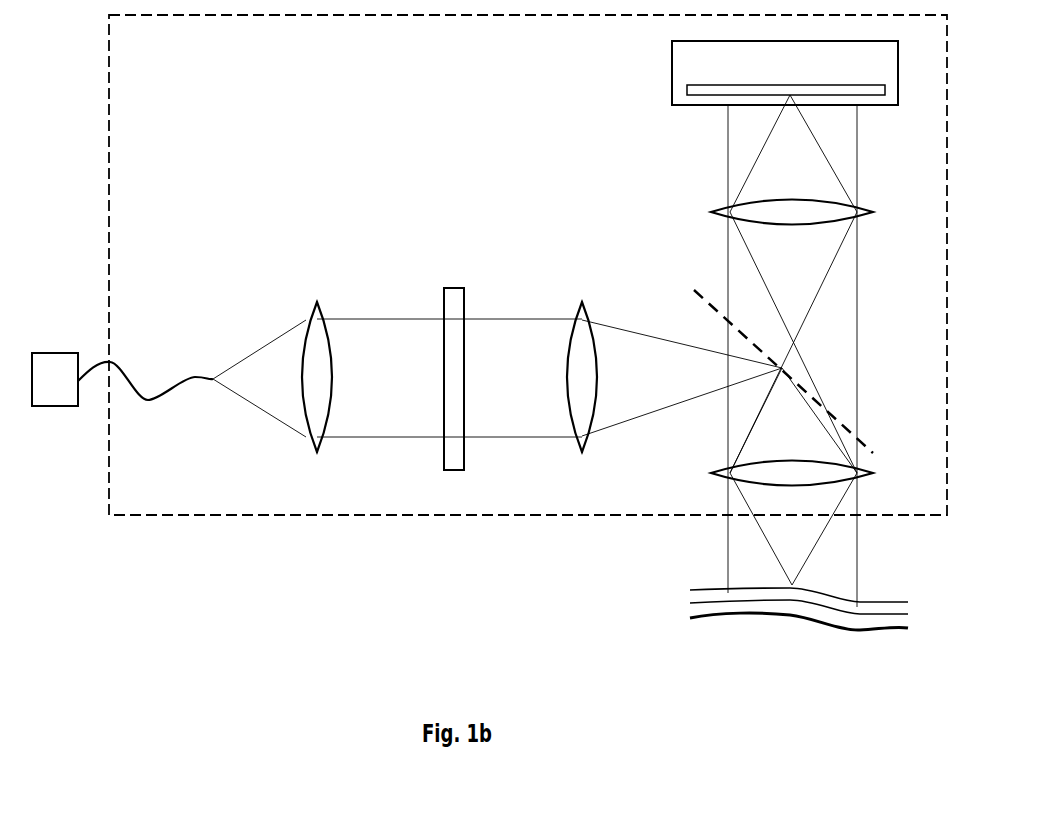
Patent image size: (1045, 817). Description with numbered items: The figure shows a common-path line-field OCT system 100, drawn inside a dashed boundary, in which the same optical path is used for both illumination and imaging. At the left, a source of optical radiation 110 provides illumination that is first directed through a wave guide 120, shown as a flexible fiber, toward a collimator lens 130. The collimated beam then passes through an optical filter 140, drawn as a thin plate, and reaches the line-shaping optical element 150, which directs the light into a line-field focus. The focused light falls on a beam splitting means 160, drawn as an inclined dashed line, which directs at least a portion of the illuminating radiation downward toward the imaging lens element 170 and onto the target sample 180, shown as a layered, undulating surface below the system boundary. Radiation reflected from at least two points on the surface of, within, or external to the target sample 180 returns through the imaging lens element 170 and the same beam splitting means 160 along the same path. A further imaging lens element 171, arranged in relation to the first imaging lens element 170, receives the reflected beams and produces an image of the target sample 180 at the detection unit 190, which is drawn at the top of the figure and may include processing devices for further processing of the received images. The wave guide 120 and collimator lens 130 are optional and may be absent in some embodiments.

The common-path line-field OCT system 100 is at (345, 515).
The source of optical radiation 110 is at (55, 357).
The wave guide 120 is at (145, 360).
The collimator lens 130 is at (314, 349).
The optical filter 140 is at (452, 358).
The line-shaping optical element 150 is at (582, 349).
The beam splitting means 160 is at (811, 374).
The imaging lens element 170 is at (762, 471).
The further imaging lens element 171 is at (762, 210).
The target sample 180 is at (769, 609).
The detection unit 190 is at (785, 73).